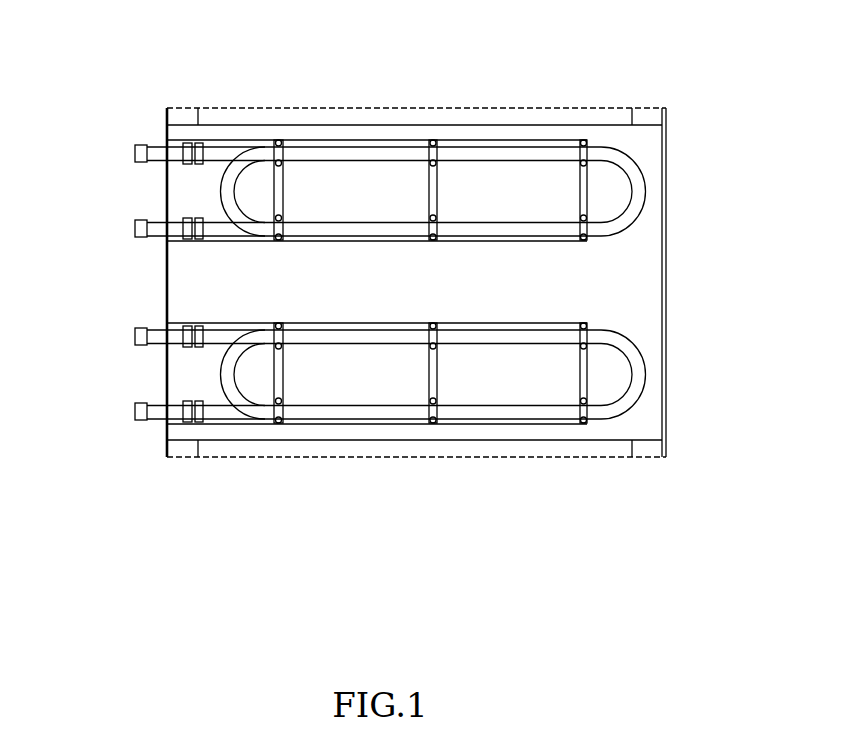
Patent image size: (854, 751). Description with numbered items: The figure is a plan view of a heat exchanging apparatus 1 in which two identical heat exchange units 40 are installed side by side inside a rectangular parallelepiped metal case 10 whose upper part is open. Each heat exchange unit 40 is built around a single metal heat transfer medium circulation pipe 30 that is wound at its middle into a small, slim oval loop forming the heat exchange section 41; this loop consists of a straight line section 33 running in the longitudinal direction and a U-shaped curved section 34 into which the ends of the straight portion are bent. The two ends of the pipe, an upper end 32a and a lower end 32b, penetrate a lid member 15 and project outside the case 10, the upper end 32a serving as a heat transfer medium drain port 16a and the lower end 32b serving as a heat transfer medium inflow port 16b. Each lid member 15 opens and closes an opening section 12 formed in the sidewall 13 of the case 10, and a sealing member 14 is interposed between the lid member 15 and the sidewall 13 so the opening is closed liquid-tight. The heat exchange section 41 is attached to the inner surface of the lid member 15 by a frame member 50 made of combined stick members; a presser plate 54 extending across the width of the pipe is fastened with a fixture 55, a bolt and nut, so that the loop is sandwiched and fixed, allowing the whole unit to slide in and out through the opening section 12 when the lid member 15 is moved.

The heat exchanging apparatus 1 is at (129, 117).
The case 10 is at (418, 292).
The opening section 12 is at (173, 128).
The sidewall 13 is at (247, 458).
The sealing member 14 is at (167, 460).
The lid member 15 is at (167, 256).
The heat transfer medium drain port 16a is at (140, 222).
The heat transfer medium inflow port 16b is at (140, 160).
The heat transfer medium circulation pipe 30 is at (446, 191).
The upper end 32a is at (133, 228).
The lower end 32b is at (134, 153).
The straight line section 33 is at (374, 191).
The curved section 34 is at (633, 153).
The heat exchange unit 40 is at (446, 168).
The heat exchange section 41 is at (523, 139).
The frame member 50 is at (562, 141).
The presser plate 54 is at (282, 178).
The fixture 55 is at (278, 140).